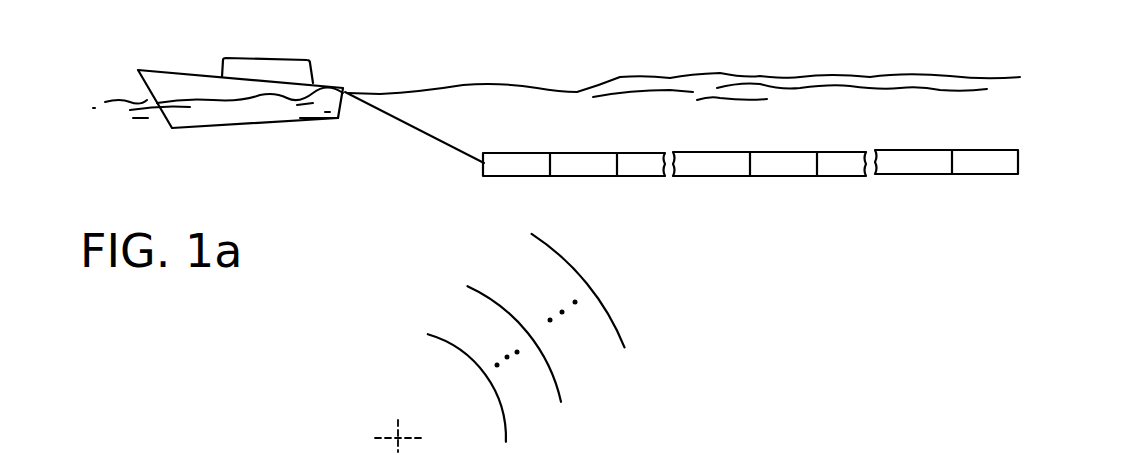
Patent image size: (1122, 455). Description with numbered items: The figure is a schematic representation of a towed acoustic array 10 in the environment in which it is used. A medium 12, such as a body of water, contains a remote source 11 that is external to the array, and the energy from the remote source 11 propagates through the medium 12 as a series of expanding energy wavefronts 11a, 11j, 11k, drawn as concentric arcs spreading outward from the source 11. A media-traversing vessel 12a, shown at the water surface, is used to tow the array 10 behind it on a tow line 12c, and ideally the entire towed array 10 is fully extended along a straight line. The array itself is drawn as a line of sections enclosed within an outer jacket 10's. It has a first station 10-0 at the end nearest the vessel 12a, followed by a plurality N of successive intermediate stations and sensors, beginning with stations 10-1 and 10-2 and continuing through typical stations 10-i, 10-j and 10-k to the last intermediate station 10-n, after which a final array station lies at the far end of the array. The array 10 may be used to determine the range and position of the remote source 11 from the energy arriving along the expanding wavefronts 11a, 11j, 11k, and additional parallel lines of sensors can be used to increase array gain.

The towed array 10 is at (757, 166).
The first station 10-0 is at (490, 177).
The intermediate station and sensor 10-1 is at (597, 177).
The intermediate station and sensor 10-2 is at (643, 153).
The intermediate station and sensor 10-i is at (722, 150).
The intermediate station and sensor 10-j is at (782, 176).
The intermediate station and sensor 10-k is at (838, 150).
The intermediate station and sensor 10-n is at (913, 175).
The outer jacket 10's is at (977, 444).
The remote source 11 is at (398, 438).
The expanding energy wavefront 11a is at (427, 336).
The expanding energy wavefront 11j is at (557, 377).
The expanding energy wavefront 11k is at (612, 305).
The medium 12 is at (219, 180).
The media-traversing vessel 12a is at (312, 122).
The tow cable 12c is at (415, 128).